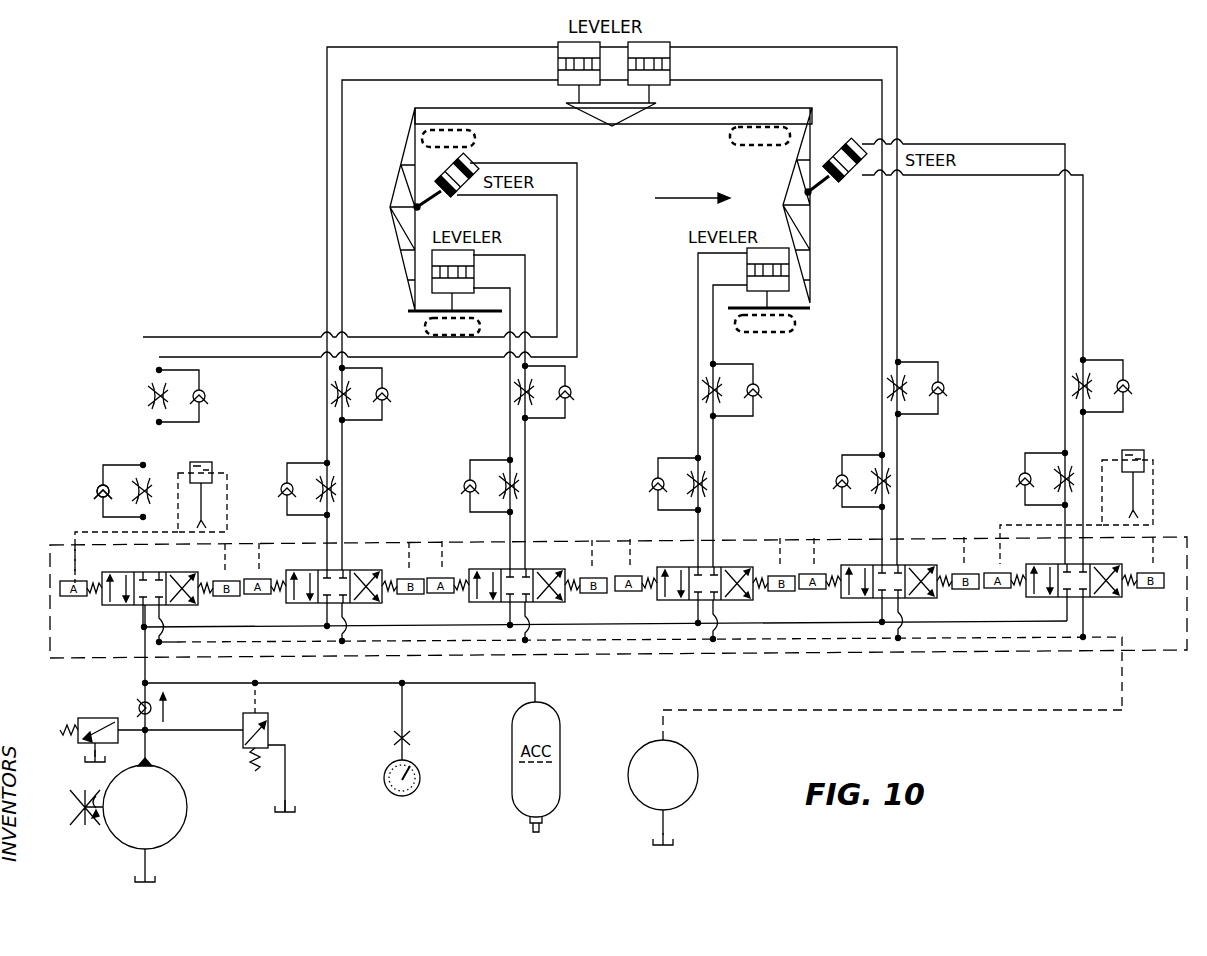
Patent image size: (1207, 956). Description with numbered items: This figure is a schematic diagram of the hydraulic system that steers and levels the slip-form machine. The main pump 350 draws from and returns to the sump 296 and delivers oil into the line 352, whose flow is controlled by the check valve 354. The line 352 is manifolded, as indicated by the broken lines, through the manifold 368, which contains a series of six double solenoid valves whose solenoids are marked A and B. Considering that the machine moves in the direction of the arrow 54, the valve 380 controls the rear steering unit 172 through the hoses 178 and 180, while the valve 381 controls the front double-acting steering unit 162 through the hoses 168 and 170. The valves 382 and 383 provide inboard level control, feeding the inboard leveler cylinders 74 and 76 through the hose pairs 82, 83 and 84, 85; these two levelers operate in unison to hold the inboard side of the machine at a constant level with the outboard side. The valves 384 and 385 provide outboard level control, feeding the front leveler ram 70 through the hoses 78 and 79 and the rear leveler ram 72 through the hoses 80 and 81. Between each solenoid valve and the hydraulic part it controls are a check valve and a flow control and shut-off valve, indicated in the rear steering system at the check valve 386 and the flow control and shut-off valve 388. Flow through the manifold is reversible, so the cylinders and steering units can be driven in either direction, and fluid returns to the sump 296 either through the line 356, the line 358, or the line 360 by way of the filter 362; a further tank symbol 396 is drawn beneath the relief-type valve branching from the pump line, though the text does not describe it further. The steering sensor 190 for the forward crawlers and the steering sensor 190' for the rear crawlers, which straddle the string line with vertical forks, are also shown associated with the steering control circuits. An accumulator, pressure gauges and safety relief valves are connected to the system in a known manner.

The arrow 54 is at (684, 196).
The forward outboard hydraulic cylinder housing 70 is at (743, 269).
The rearward outboard hydraulic cylinder 72 is at (473, 272).
The hydraulic cylinder housing 74 is at (672, 67).
The hydraulic cylinder housing 76 is at (557, 67).
The hose 78 is at (698, 304).
The hose 79 is at (713, 322).
The hose 80 is at (510, 368).
The hose 81 is at (525, 326).
The hose 82 is at (745, 47).
The hose 83 is at (794, 79).
The hose 84 is at (442, 47).
The hose 85 is at (469, 80).
The double-acting hydraulic steering unit 162 is at (829, 144).
The hydraulic control hose 168 is at (1083, 276).
The hydraulic control hose 170 is at (1065, 276).
The hydraulic steering unit 172 is at (466, 168).
The hydraulic control hose 178 is at (557, 226).
The hydraulic control hose 180 is at (577, 203).
The steering sensor 190 is at (1096, 499).
The steering sensor 190' is at (170, 515).
The sump 296 is at (160, 871).
The main pump 350 is at (182, 830).
The line 352 is at (148, 748).
The check valve 354 is at (138, 705).
The line 356 is at (182, 683).
The line 358 is at (242, 660).
The line 360 is at (996, 712).
The filter 362 is at (698, 764).
The manifold 368 is at (50, 578).
The double solenoid valve 380 is at (170, 572).
The double solenoid valve 381 is at (1107, 565).
The double solenoid valve 382 is at (368, 570).
The double solenoid valve 383 is at (924, 565).
The double solenoid valve 384 is at (551, 569).
The double solenoid valve 385 is at (739, 567).
The check valve 386 is at (94, 493).
The flow control and shut-off valve 388 is at (148, 490).
The reservoir 396 is at (292, 803).